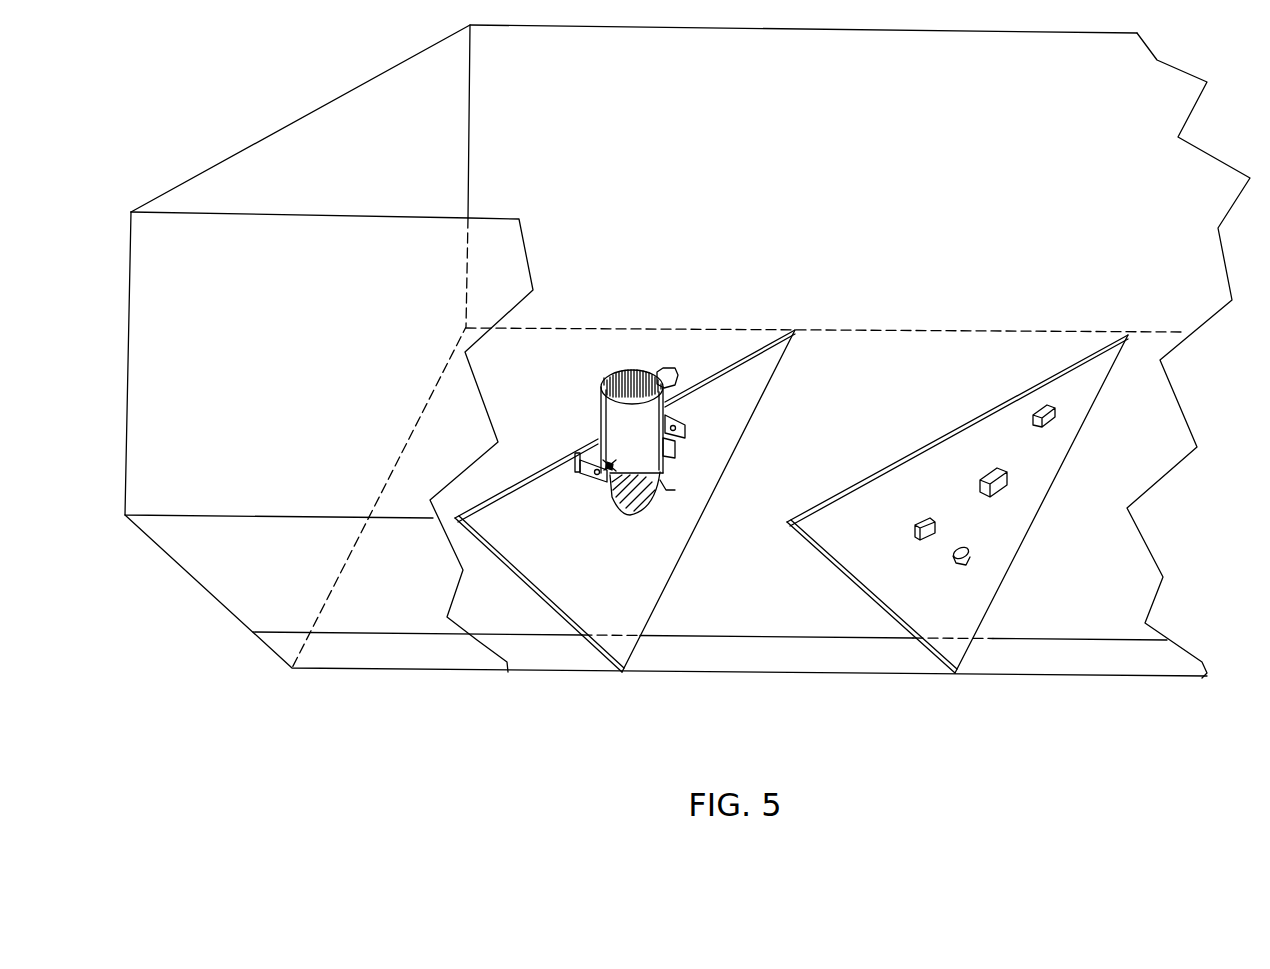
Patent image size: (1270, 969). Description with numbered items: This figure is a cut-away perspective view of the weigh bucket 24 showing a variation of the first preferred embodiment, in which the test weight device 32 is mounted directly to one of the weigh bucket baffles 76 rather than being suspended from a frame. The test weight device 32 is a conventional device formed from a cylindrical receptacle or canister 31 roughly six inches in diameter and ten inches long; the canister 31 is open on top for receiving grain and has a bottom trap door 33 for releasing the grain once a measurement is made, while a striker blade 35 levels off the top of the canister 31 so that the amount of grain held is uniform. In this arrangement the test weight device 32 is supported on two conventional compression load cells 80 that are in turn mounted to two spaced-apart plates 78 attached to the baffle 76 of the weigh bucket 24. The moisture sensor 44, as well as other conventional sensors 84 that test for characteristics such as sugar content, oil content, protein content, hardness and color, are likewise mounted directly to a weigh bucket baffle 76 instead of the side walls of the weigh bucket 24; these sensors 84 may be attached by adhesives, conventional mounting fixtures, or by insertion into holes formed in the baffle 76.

The weigh bucket 24 is at (247, 653).
The canister 31 is at (622, 503).
The test weight device 32 is at (675, 489).
The trap door 33 is at (635, 502).
The striker blade 35 is at (600, 383).
The moisture sensor 44 is at (925, 520).
The baffle 76 is at (607, 622).
The plate 78 is at (592, 456).
The compression load cell 80 is at (675, 420).
The sensor 84 is at (1047, 422).